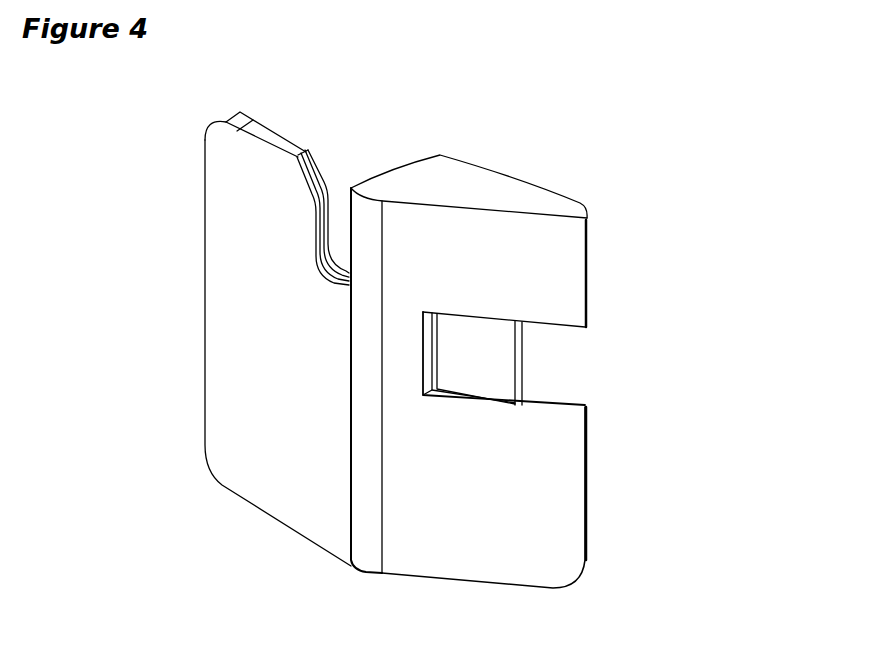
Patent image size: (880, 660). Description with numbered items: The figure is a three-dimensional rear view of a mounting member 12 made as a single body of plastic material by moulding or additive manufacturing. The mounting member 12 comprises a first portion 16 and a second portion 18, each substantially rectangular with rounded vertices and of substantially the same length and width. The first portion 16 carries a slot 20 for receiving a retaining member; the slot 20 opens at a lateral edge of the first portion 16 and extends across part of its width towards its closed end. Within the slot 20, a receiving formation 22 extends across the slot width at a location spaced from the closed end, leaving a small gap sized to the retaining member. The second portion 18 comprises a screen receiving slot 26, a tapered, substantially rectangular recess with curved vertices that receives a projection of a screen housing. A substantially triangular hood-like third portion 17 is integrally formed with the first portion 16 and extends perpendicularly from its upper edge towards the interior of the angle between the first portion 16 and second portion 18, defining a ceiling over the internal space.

The mounting member 12 is at (660, 180).
The first portion 16 is at (498, 533).
The third portion 17 is at (490, 193).
The second portion 18 is at (224, 383).
The slot 20 is at (570, 368).
The receiving formation 22 is at (486, 379).
The screen receiving slot 26 is at (337, 222).